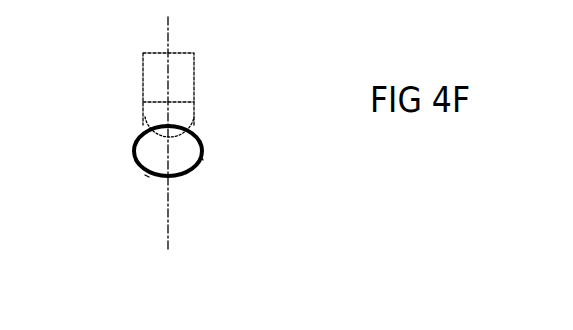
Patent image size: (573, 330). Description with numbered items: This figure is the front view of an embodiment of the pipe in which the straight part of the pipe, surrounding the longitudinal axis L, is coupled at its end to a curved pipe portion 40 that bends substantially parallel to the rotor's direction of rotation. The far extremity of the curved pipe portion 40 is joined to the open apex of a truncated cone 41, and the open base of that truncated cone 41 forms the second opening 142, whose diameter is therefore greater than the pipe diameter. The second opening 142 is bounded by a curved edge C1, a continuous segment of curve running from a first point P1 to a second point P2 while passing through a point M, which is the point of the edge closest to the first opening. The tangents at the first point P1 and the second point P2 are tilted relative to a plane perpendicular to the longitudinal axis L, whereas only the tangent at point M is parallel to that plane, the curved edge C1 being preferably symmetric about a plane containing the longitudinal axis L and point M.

The longitudinal axis L is at (178, 132).
The point M is at (168, 126).
The curved pipe portion 40 is at (190, 108).
The truncated cone 41 is at (144, 124).
The second opening 142 is at (188, 155).
The first point P1 is at (136, 162).
The second point P2 is at (202, 158).
The curved edge C1 is at (147, 176).